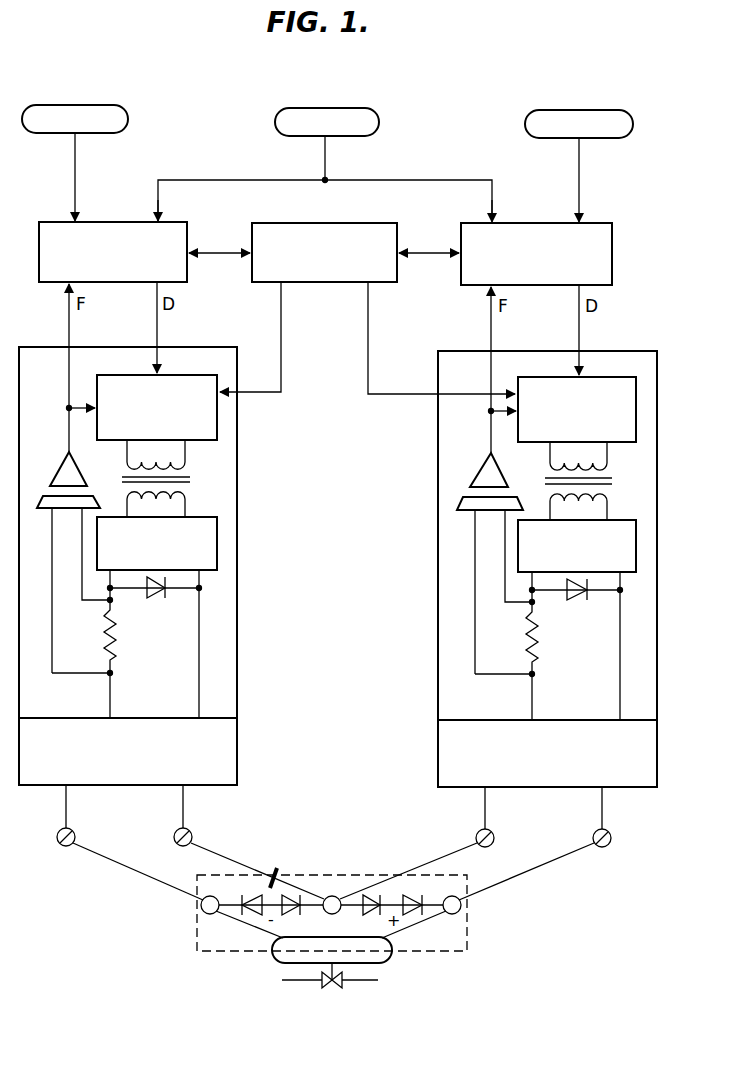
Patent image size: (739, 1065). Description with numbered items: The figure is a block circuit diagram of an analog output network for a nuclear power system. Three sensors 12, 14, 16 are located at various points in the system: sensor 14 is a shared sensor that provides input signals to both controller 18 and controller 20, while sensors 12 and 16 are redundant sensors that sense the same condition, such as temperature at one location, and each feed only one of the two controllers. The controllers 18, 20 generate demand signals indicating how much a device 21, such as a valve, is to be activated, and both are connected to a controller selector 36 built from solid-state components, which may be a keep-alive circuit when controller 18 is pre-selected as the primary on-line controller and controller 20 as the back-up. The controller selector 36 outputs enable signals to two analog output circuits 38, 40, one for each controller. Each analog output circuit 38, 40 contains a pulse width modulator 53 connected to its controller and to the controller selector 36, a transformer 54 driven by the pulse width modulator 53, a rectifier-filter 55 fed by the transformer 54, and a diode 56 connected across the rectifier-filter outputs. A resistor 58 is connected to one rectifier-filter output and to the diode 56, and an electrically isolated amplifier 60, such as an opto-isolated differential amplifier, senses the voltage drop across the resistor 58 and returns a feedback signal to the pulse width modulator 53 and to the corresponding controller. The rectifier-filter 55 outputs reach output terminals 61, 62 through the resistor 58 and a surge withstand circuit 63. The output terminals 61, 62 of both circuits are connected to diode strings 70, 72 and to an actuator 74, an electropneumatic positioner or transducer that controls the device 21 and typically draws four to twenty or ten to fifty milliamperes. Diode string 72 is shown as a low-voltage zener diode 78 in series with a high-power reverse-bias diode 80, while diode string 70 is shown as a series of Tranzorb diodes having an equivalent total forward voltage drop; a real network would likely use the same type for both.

The sensor 12 is at (130, 112).
The shared sensor 14 is at (277, 114).
The sensor 16 is at (527, 118).
The controller 18 is at (614, 236).
The controller 20 is at (188, 237).
The device 21 is at (337, 988).
The controller selector 36 is at (398, 233).
The analog output circuit 38 is at (616, 351).
The analog output circuit 40 is at (219, 347).
The pulse width modulator 53 is at (112, 376).
The transformer 54 is at (220, 478).
The rectifier-filter 55 is at (218, 526).
The diode 56 is at (158, 597).
The resistor 58 is at (117, 657).
The electrically isolated amplifier 60 is at (48, 488).
The output terminal 61 is at (176, 831).
The output terminal 62 is at (75, 835).
The surge withstand circuit 63 is at (228, 752).
The diode string 70 is at (396, 890).
The diode string 72 is at (276, 866).
The actuator 74 is at (272, 958).
The zener diode 78 is at (255, 893).
The reverse-bias diode 80 is at (291, 893).